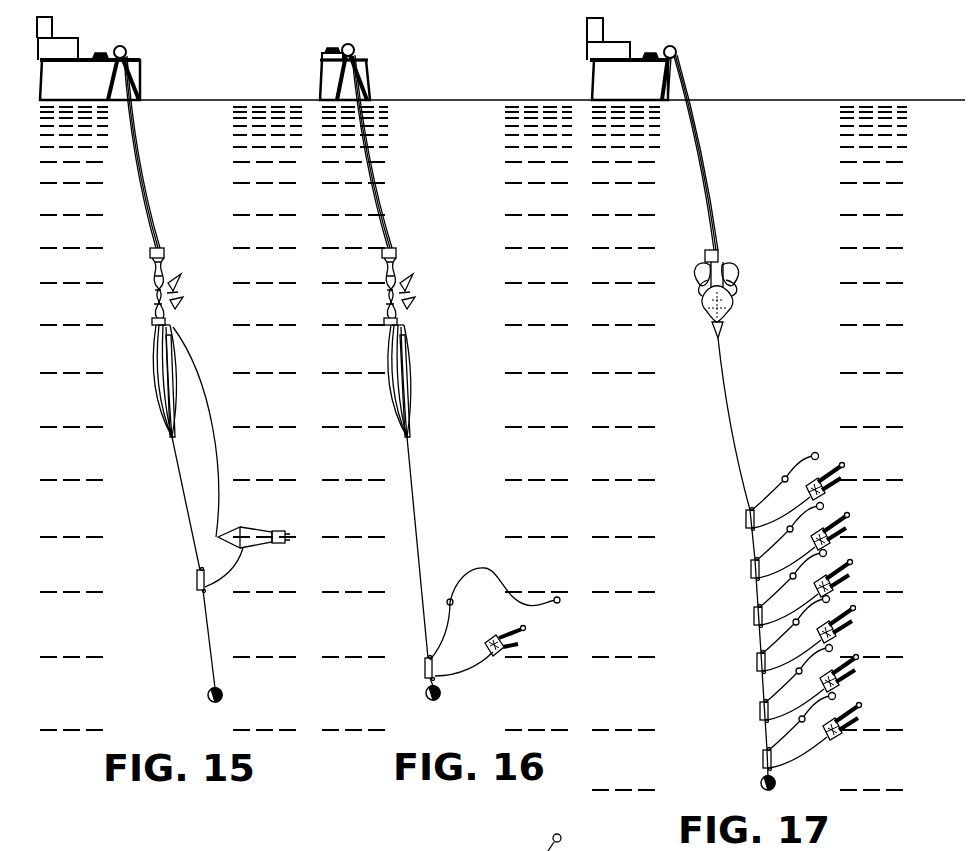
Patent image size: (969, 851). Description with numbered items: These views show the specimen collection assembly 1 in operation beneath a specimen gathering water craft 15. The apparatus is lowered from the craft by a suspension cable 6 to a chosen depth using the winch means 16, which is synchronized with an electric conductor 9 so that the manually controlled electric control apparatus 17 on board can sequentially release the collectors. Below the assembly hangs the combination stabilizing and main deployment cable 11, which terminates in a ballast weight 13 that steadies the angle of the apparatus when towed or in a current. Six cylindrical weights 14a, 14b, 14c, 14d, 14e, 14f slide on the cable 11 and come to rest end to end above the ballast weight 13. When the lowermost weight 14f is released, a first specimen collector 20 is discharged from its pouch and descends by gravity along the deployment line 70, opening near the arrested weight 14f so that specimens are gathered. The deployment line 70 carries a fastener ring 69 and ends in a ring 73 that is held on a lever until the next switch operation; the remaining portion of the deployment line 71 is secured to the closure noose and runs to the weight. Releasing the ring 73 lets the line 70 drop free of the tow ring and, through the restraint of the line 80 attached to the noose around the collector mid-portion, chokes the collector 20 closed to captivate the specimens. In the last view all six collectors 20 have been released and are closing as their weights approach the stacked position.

In FIG. 15, the specimen collection assembly 1 is at (131, 297).
In FIG. 16, the specimen collection assembly 1 is at (362, 297).
In FIG. 17, the specimen collection assembly 1 is at (758, 305).
In FIG. 15, the suspension cable 6 is at (152, 192).
In FIG. 16, the suspension cable 6 is at (380, 197).
In FIG. 17, the suspension cable 6 is at (705, 197).
In FIG. 15, the electric conductor 9 is at (158, 217).
In FIG. 16, the electric conductor 9 is at (388, 202).
In FIG. 17, the electric conductor 9 is at (717, 210).
In FIG. 15, the combination stabilizing and main deployment cable 11 is at (182, 507).
In FIG. 16, the combination stabilizing and main deployment cable 11 is at (413, 518).
In FIG. 17, the combination stabilizing and main deployment cable 11 is at (727, 390).
In FIG. 15, the ballast weight 13 is at (208, 694).
In FIG. 16, the ballast weight 13 is at (427, 693).
In FIG. 17, the ballast weight 13 is at (762, 783).
In FIG. 17, the cylindrical weight 14a is at (747, 513).
In FIG. 17, the cylindrical weight 14b is at (752, 563).
In FIG. 17, the cylindrical weight 14c is at (755, 615).
In FIG. 17, the cylindrical weight 14d is at (758, 665).
In FIG. 15, the cylindrical weight 14e is at (167, 430).
In FIG. 16, the cylindrical weight 14e is at (408, 423).
In FIG. 17, the cylindrical weight 14e is at (760, 708).
In FIG. 15, the cylindrical weight 14f is at (197, 578).
In FIG. 16, the cylindrical weight 14f is at (425, 672).
In FIG. 17, the cylindrical weight 14f is at (763, 757).
In FIG. 15, the specimen gathering water craft 15 is at (84, 85).
In FIG. 16, the specimen gathering water craft 15 is at (328, 82).
In FIG. 17, the specimen gathering water craft 15 is at (630, 91).
In FIG. 15, the winch means 16 is at (100, 40).
In FIG. 16, the winch means 16 is at (324, 41).
In FIG. 17, the winch means 16 is at (642, 40).
In FIG. 15, the electric control apparatus 17 is at (143, 34).
In FIG. 16, the electric control apparatus 17 is at (368, 37).
In FIG. 17, the electric control apparatus 17 is at (690, 40).
In FIG. 15, the specimen collector 20 is at (262, 513).
In FIG. 16, the specimen collector 20 is at (543, 629).
In FIG. 17, the specimen collector 20 is at (847, 494).
In FIG. 16, the fastener ring 69 is at (448, 598).
In FIG. 15, the deployment line 70 is at (200, 387).
In FIG. 16, the deployment line 70 is at (493, 572).
In FIG. 16, the remaining portion of the deployment line 71 is at (450, 625).
In FIG. 16, the ring 73 is at (561, 600).
In FIG. 15, the line 80 is at (245, 567).
In FIG. 16, the line 80 is at (477, 673).